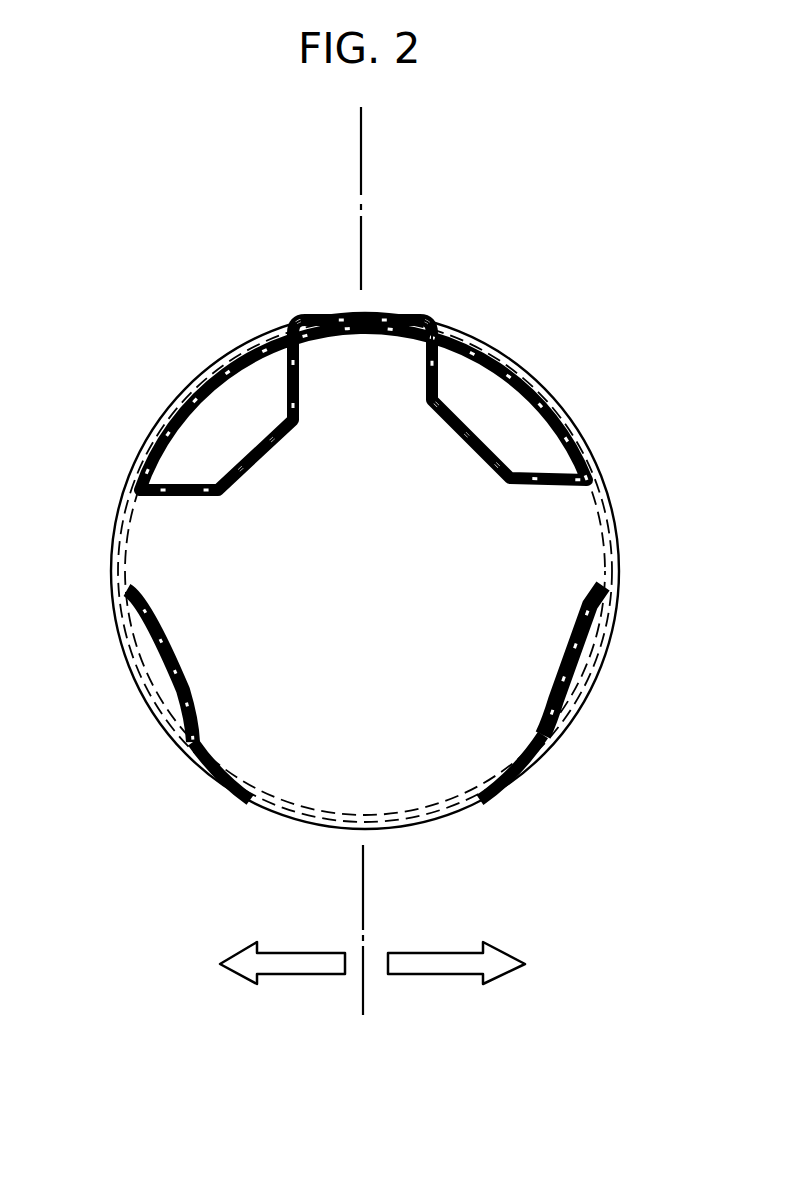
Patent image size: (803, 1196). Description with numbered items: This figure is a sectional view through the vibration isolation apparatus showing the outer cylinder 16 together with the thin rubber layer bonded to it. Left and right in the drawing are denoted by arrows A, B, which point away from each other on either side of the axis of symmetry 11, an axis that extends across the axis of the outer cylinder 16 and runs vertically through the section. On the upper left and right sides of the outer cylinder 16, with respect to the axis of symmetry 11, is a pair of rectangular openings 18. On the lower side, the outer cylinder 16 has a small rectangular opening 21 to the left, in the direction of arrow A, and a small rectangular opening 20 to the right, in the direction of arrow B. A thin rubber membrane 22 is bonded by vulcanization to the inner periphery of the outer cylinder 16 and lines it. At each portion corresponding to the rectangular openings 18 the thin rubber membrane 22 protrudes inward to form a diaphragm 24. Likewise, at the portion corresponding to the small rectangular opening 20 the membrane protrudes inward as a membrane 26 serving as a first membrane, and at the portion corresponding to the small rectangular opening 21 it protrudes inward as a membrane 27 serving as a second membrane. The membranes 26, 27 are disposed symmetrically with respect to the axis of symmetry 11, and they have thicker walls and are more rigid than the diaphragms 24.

The axis of symmetry 11 is at (361, 162).
The outer cylinder 16 is at (379, 315).
The rectangular openings 18 is at (302, 320).
The small rectangular opening 20 is at (577, 727).
The small rectangular opening 21 is at (173, 740).
The thin rubber membrane 22 is at (363, 328).
The diaphragm 24 is at (268, 450).
The membrane 26 is at (573, 645).
The membrane 27 is at (168, 648).
The arrow A is at (302, 975).
The arrow B is at (440, 976).